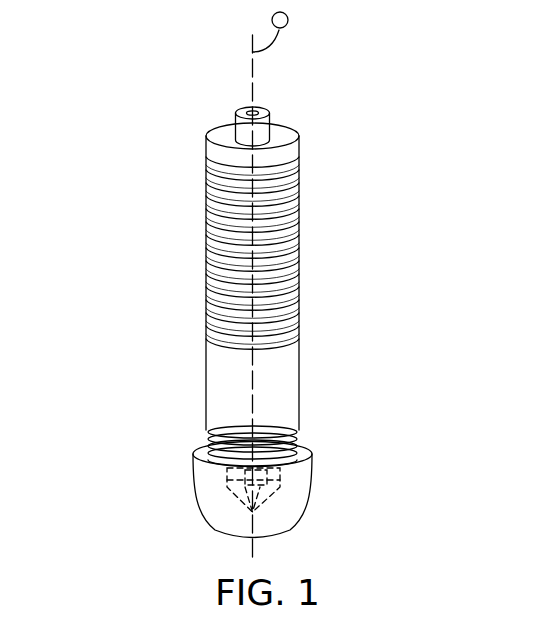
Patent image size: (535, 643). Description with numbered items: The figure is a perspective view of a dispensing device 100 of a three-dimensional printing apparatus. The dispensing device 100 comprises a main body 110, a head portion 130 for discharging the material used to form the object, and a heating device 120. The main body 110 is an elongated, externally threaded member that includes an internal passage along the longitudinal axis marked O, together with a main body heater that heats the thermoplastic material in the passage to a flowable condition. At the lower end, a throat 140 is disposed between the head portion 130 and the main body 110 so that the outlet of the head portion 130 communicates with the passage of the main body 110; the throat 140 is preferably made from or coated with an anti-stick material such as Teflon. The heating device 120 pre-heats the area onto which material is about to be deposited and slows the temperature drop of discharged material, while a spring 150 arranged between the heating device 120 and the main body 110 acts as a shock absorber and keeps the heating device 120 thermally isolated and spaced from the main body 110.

The dispensing device 100 is at (168, 104).
The main body 110 is at (290, 395).
The heating device 120 is at (297, 498).
The head portion 130 is at (282, 470).
The throat 140 is at (276, 432).
The spring 150 is at (293, 443).